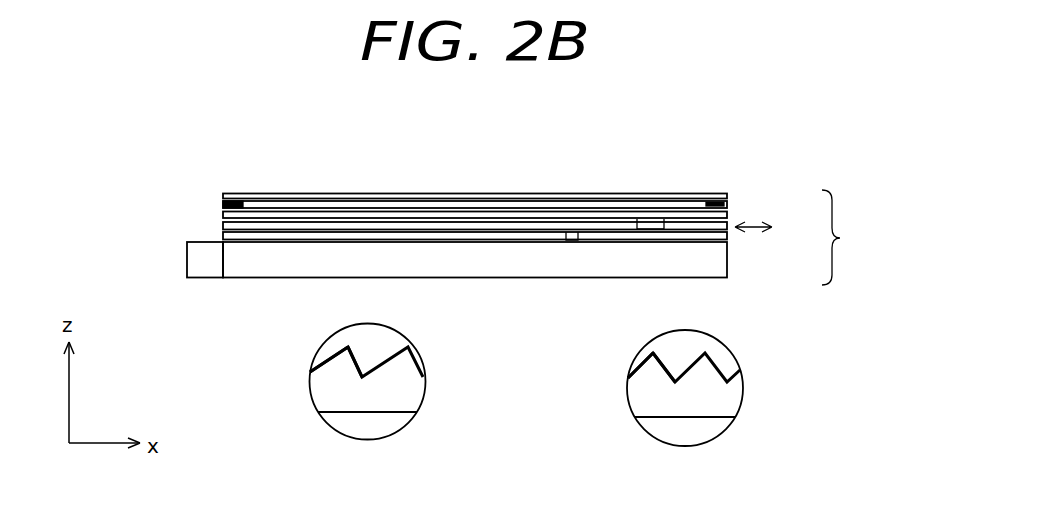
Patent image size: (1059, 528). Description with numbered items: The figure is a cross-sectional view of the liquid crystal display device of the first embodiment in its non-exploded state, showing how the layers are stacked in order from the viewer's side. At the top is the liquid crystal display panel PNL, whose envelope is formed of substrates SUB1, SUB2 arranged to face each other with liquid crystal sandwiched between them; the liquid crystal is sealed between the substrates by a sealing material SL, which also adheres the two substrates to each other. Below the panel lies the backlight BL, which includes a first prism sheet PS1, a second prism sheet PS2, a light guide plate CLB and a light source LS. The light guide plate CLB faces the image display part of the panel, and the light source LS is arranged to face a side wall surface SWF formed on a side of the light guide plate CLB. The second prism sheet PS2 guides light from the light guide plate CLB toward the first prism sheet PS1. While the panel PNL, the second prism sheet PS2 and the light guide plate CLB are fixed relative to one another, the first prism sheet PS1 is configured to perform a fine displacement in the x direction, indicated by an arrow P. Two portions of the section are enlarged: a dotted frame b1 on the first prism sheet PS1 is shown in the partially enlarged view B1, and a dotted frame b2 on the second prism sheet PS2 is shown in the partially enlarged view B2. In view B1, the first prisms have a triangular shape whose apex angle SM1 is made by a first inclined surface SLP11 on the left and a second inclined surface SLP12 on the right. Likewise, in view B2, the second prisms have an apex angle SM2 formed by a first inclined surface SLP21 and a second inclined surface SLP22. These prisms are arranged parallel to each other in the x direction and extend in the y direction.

The liquid crystal display panel PNL is at (501, 165).
The substrate SUB1 is at (305, 211).
The substrate SUB2 is at (380, 193).
The sealing material SL is at (227, 201).
The first prism sheet PS1 is at (437, 222).
The second prism sheet PS2 is at (493, 232).
The light guide plate CLB is at (595, 257).
The light source LS is at (195, 265).
The side wall surface SWF is at (225, 252).
The arrow P is at (764, 228).
The backlight BL is at (854, 237).
The dotted frame b1 is at (665, 219).
The dotted frame b2 is at (556, 222).
The partially enlarged view B1 is at (647, 230).
The partially enlarged view B2 is at (566, 240).
The apex angle SM1 is at (652, 352).
The apex angle SM2 is at (347, 345).
The first inclined surface SLP11 is at (643, 360).
The second inclined surface SLP12 is at (668, 367).
The first inclined surface SLP21 is at (322, 360).
The second inclined surface SLP22 is at (355, 360).